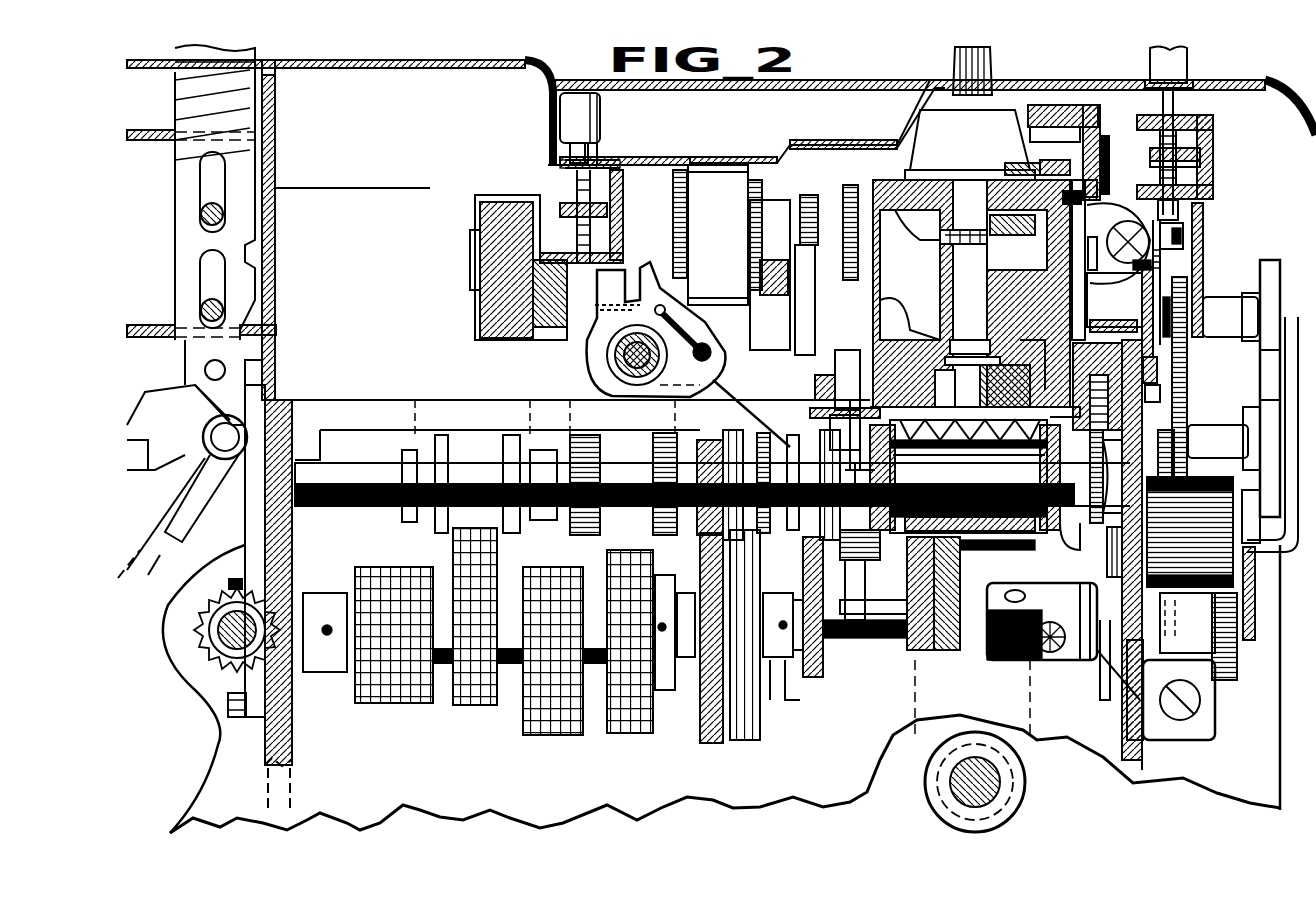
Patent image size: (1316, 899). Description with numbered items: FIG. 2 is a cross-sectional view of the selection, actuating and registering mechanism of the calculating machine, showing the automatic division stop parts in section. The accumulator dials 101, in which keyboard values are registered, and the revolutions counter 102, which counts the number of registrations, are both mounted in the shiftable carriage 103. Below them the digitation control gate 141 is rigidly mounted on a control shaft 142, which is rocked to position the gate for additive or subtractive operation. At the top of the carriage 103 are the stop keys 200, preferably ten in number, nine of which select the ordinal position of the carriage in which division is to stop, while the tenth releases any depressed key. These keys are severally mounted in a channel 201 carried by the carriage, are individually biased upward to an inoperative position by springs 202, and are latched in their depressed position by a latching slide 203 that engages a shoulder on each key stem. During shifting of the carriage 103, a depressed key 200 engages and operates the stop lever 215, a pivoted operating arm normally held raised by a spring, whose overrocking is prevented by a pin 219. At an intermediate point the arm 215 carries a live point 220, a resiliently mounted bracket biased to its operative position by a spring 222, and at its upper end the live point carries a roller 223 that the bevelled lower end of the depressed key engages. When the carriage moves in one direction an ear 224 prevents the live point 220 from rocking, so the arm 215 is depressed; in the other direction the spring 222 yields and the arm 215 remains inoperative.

The accumulator dials 101 is at (925, 150).
The revolutions counter 102 is at (706, 185).
The shiftable carriage 103 is at (839, 128).
The digitation control gate 141 is at (1022, 545).
The control shaft 142 is at (975, 770).
The stop keys 200 is at (1158, 66).
The channel 201 is at (1213, 140).
The springs 202 is at (1160, 133).
The latching slide 203 is at (1158, 163).
The stop lever 215 is at (1142, 298).
The pin 219 is at (1160, 392).
The live point 220 is at (1160, 272).
The spring 222 is at (1192, 360).
The roller 223 is at (1178, 232).
The ear 224 is at (1120, 242).